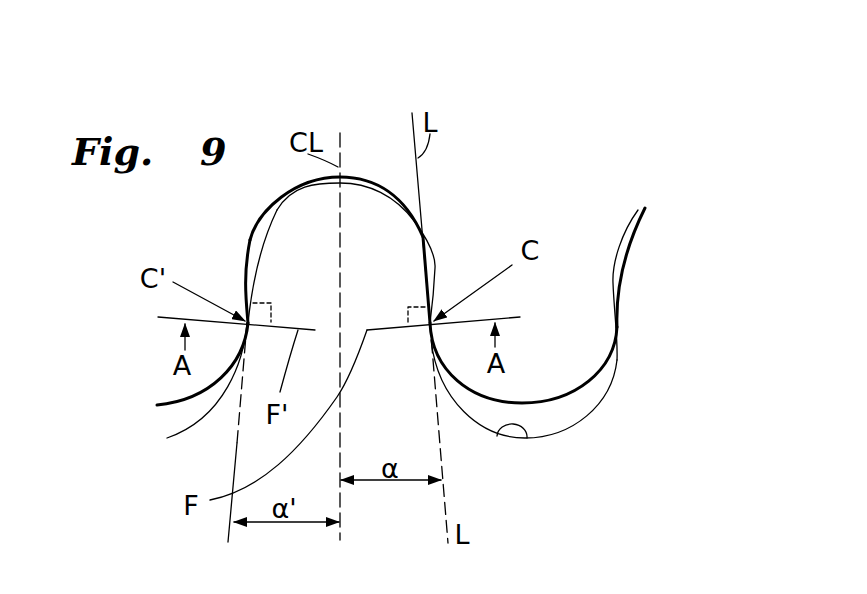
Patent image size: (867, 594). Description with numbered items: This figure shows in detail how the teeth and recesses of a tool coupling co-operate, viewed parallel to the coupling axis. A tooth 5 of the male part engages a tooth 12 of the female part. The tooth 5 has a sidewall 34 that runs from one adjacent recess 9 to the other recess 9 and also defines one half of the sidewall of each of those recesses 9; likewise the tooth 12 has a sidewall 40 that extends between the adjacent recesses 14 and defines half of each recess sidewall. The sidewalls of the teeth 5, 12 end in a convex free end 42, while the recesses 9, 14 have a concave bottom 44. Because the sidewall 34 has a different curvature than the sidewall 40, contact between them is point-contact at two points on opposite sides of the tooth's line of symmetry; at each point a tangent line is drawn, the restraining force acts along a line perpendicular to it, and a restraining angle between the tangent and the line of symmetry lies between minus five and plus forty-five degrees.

The tooth 5 is at (285, 248).
The recess 9 is at (192, 413).
The tooth 12 is at (553, 360).
The recess 14 is at (273, 201).
The sidewall 34 is at (428, 262).
The sidewall 40 is at (424, 232).
The convex free end 42 is at (368, 188).
The concave bottom 44 is at (350, 177).